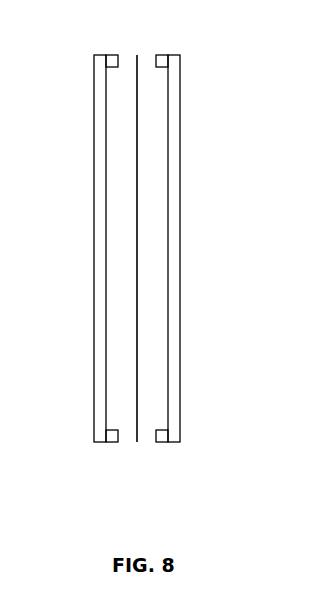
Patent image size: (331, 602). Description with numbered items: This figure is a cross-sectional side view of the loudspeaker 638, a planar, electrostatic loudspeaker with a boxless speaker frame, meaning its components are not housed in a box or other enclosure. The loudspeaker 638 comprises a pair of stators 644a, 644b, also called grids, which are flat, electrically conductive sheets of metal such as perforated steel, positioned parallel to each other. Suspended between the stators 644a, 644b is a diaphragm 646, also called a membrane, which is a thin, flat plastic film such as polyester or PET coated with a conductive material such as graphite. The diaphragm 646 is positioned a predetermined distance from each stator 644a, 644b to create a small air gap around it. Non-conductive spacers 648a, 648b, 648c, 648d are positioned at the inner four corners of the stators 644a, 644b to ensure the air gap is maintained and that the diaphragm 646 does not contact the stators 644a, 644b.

The loudspeaker 638 is at (160, 252).
The stator 644a is at (180, 233).
The stator 644b is at (94, 254).
The diaphragm 646 is at (137, 205).
The non-conductive spacer 648a is at (157, 55).
The non-conductive spacer 648b is at (112, 55).
The non-conductive spacer 648c is at (112, 442).
The non-conductive spacer 648d is at (162, 442).